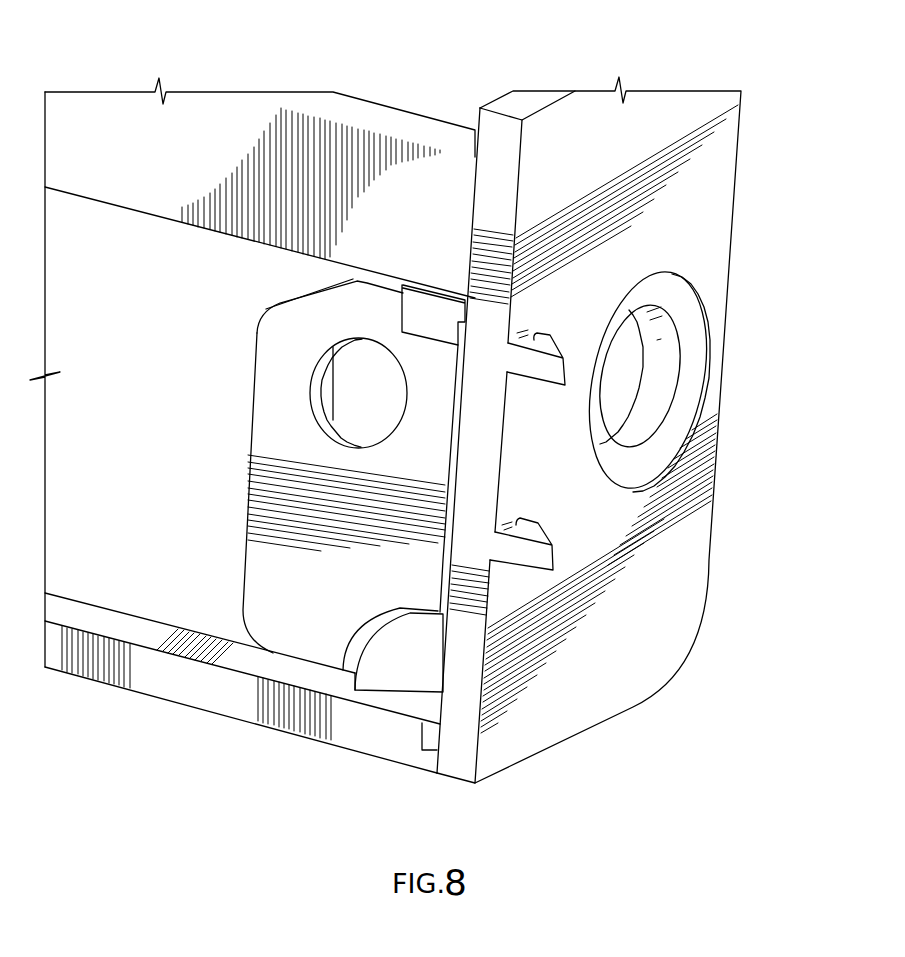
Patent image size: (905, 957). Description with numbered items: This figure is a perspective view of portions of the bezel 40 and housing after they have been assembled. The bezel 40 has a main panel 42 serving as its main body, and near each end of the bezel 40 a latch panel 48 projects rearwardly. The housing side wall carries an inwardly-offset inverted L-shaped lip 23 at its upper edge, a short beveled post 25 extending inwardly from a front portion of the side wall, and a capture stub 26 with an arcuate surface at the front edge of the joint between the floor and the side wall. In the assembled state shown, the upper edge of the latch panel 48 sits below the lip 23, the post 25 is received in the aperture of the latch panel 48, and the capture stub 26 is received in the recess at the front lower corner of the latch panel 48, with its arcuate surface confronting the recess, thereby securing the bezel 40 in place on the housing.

The bezel 40 is at (775, 100).
The main panel 42 is at (717, 205).
The inverted L-shaped lip 23 is at (300, 141).
The post 25 is at (360, 383).
The latch panel 48 is at (297, 627).
The capture stub 26 is at (412, 670).